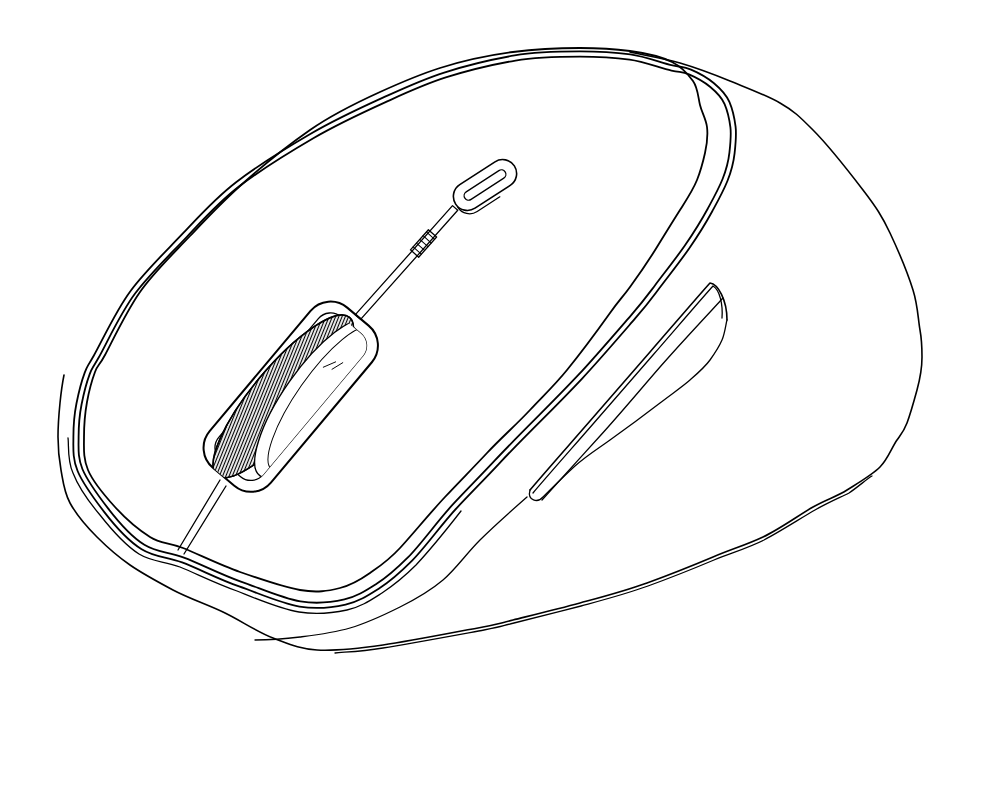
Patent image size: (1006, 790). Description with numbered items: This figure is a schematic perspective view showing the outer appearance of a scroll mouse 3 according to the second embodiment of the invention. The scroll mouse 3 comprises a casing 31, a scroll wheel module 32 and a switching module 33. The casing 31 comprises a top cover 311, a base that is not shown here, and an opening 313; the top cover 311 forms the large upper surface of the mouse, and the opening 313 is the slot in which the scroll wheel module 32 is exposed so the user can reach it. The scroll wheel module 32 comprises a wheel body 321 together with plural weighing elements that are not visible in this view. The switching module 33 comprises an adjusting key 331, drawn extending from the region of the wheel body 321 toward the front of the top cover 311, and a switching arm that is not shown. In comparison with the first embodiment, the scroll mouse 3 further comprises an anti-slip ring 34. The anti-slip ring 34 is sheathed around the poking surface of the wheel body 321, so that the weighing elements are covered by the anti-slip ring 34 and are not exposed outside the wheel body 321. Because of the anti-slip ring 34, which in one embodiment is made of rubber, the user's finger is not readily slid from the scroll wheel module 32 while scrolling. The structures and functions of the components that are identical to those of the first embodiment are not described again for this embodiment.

The scroll mouse 3 is at (204, 64).
The casing 31 is at (801, 142).
The top cover 311 is at (881, 250).
The opening 313 is at (328, 322).
The scroll wheel module 32 is at (338, 364).
The wheel body 321 is at (235, 413).
The switching module 33 is at (408, 245).
The adjusting key 331 is at (433, 248).
The anti-slip ring 34 is at (281, 357).